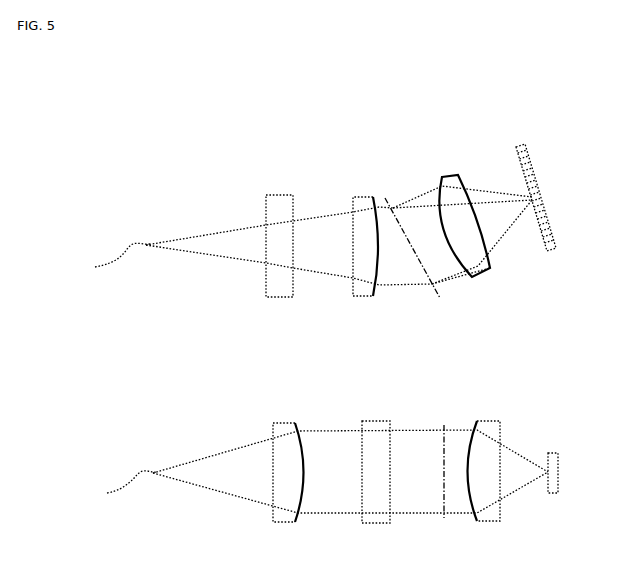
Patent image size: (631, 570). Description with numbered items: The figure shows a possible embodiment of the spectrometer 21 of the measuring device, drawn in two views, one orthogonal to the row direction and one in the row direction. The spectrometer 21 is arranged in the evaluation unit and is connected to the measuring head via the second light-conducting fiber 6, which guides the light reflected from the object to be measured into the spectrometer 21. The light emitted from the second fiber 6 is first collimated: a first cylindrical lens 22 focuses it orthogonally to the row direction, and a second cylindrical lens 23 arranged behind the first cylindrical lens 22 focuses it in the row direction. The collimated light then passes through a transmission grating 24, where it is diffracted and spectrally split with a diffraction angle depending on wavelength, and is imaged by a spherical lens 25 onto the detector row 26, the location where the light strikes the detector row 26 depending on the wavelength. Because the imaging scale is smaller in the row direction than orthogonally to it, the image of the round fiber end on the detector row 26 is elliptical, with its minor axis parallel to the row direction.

The second light-conducting fiber 6 is at (108, 243).
The spectrometer 21 is at (222, 113).
The first cylindrical lens 22 is at (282, 192).
The second cylindrical lens 23 is at (363, 192).
The transmission grating 24 is at (385, 188).
The spherical lens 25 is at (447, 182).
The detector row 26 is at (523, 142).